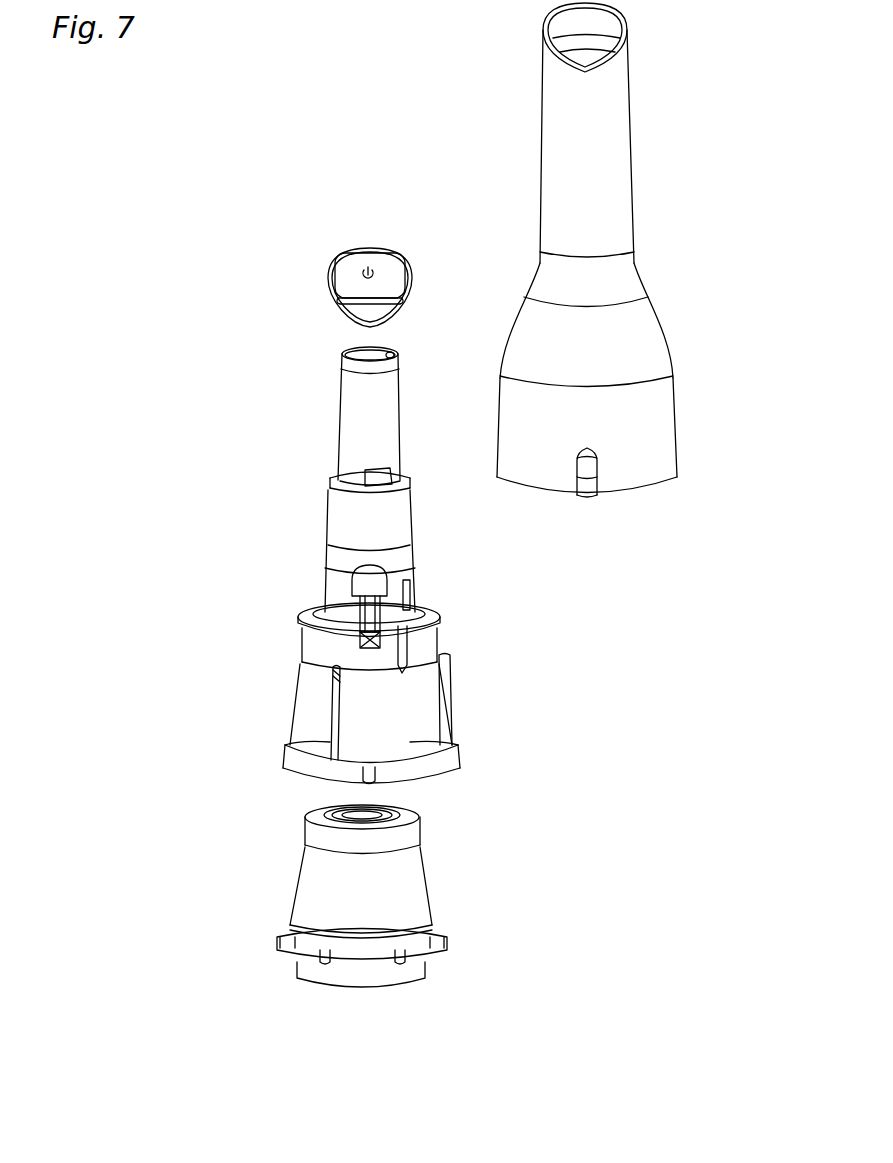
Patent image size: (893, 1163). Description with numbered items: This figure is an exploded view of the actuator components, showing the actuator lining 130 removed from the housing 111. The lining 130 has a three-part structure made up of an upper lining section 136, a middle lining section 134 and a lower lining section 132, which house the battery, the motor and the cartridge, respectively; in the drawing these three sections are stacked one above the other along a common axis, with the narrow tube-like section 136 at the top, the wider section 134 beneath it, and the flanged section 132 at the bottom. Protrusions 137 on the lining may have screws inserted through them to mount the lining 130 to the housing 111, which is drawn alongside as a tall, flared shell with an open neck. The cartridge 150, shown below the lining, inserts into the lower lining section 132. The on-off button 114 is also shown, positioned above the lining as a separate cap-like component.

The housing 111 is at (658, 312).
The on-off button 114 is at (335, 265).
The actuator lining 130 is at (236, 790).
The lower lining section 132 is at (303, 700).
The lining section 134 is at (328, 520).
The lining section 136 is at (338, 427).
The protrusions 137 is at (447, 668).
The cartridge 150 is at (432, 880).